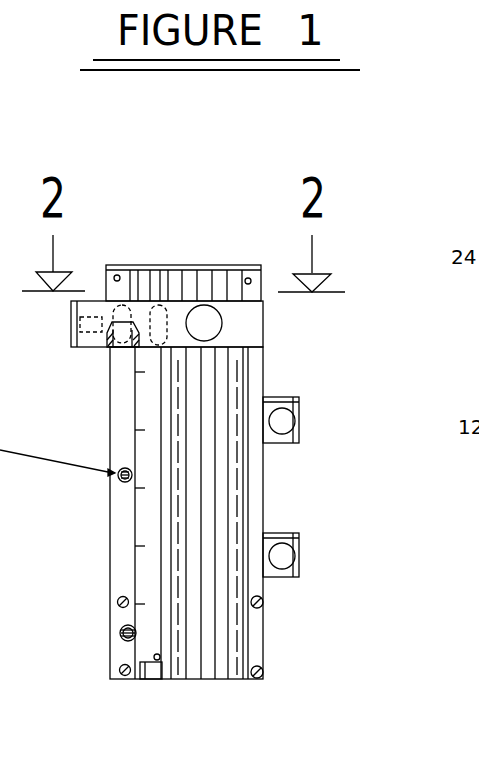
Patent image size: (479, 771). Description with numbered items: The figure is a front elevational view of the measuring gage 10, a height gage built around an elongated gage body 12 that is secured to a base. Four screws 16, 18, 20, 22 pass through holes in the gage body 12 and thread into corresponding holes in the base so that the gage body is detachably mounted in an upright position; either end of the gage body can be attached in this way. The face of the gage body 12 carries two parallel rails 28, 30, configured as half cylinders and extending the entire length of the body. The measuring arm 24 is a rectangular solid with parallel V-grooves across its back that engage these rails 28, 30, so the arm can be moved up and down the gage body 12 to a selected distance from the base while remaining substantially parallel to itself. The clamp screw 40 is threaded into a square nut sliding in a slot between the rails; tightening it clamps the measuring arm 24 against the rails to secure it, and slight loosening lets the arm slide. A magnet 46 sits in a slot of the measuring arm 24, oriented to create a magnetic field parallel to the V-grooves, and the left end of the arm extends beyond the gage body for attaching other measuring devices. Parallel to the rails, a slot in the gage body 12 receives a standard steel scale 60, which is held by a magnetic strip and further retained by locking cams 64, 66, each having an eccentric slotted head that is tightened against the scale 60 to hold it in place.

The measuring gage 10 is at (390, 178).
The gage body 12 is at (230, 513).
The screw 16 is at (117, 607).
The screw 18 is at (120, 678).
The screw 20 is at (263, 607).
The screw 22 is at (263, 680).
The measuring arm 24 is at (67, 347).
The rail 28 is at (182, 670).
The rail 30 is at (241, 672).
The clamp screw 40 is at (219, 334).
The magnet 46 is at (113, 362).
The steel scale 60 is at (140, 557).
The locking cam 64 is at (117, 483).
The locking cam 66 is at (118, 645).